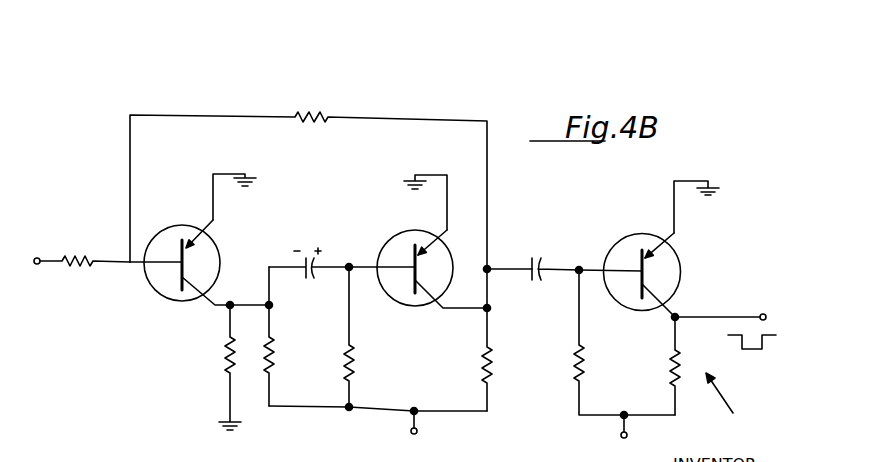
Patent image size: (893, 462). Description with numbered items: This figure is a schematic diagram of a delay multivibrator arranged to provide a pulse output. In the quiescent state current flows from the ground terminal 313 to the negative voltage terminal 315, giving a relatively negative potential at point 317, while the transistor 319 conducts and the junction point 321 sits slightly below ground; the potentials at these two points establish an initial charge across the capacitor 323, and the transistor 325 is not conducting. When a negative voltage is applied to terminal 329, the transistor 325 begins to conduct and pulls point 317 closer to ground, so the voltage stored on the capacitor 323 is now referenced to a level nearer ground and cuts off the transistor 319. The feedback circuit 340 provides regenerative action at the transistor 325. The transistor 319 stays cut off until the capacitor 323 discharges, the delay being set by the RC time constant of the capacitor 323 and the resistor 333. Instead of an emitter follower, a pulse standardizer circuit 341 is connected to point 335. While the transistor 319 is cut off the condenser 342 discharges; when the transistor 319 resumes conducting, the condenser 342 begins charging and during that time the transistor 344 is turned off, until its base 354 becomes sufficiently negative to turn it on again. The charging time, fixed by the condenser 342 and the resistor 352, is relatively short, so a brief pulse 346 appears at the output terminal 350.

The ground terminal 313 is at (222, 414).
The negative voltage terminal 315 is at (418, 424).
The point 317 is at (272, 307).
The transistor 319 is at (405, 248).
The junction point 321 is at (366, 250).
The capacitor 323 is at (312, 268).
The transistor 325 is at (207, 255).
The terminal 329 is at (37, 257).
The resistor 333 is at (356, 360).
The point 335 is at (489, 269).
The feedback circuit 340 is at (345, 118).
The pulse standardizer circuit 341 is at (736, 404).
The condenser 342 is at (541, 268).
The transistor 344 is at (661, 272).
The pulse 346 is at (766, 348).
The output terminal 350 is at (775, 300).
The resistor 352 is at (568, 373).
The base 354 is at (594, 270).